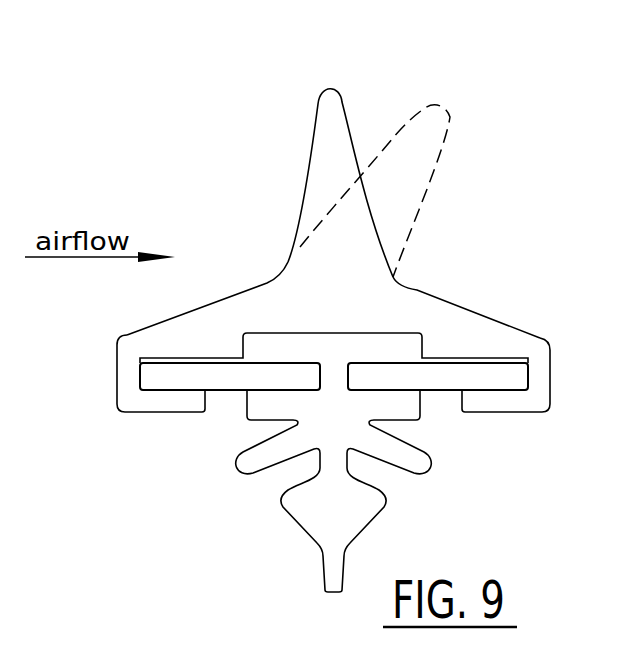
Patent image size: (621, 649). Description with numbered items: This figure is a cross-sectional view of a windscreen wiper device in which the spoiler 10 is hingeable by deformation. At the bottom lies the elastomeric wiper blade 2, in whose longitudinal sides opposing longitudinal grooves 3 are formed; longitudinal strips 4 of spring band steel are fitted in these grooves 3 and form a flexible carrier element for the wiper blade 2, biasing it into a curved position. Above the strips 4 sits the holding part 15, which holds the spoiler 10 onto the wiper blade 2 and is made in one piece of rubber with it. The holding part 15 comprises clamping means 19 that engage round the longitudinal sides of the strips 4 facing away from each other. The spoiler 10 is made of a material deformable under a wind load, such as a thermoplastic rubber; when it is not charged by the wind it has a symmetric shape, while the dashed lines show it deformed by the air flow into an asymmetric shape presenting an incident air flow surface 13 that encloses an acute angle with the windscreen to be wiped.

The wiper blade 2 is at (370, 510).
The longitudinal grooves 3 is at (317, 380).
The longitudinal strips 4 is at (223, 380).
The spoiler 10 is at (337, 125).
The incident air flow surface 13 is at (393, 138).
The holding part 15 is at (488, 337).
The clamping means 19 is at (132, 397).